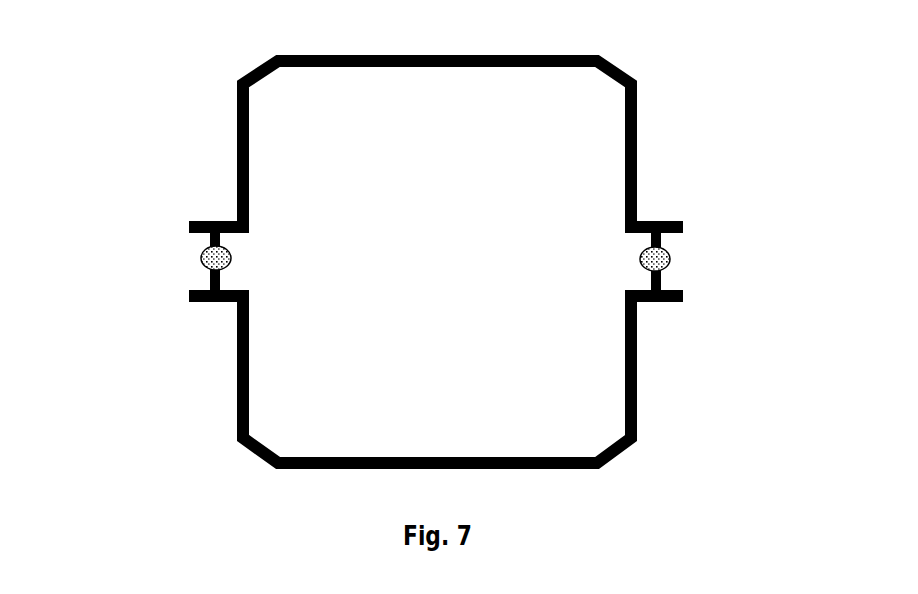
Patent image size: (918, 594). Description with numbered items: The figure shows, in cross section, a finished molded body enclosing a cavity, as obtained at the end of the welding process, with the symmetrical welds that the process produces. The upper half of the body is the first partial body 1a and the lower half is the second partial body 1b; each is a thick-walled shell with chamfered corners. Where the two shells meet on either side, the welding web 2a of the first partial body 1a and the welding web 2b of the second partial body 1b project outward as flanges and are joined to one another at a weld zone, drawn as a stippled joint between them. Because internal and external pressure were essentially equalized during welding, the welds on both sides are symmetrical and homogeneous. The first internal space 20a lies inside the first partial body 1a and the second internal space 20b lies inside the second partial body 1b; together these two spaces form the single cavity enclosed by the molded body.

The first partial body 1a is at (637, 133).
The second partial body 1b is at (637, 420).
The welding web 2a is at (208, 240).
The welding web 2b is at (208, 285).
The first internal space 20a is at (462, 150).
The second internal space 20b is at (462, 393).